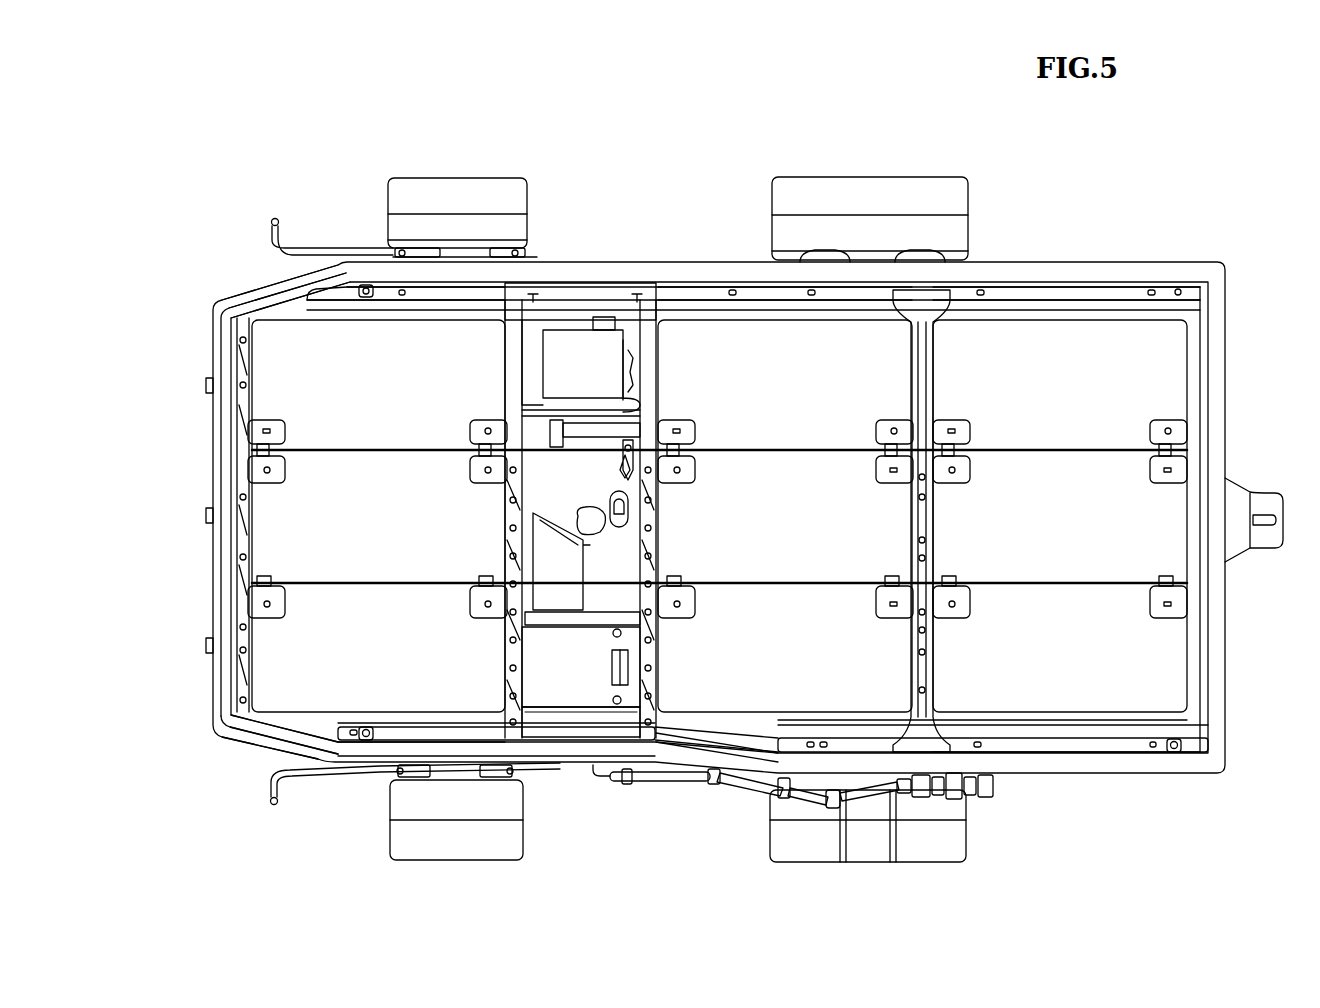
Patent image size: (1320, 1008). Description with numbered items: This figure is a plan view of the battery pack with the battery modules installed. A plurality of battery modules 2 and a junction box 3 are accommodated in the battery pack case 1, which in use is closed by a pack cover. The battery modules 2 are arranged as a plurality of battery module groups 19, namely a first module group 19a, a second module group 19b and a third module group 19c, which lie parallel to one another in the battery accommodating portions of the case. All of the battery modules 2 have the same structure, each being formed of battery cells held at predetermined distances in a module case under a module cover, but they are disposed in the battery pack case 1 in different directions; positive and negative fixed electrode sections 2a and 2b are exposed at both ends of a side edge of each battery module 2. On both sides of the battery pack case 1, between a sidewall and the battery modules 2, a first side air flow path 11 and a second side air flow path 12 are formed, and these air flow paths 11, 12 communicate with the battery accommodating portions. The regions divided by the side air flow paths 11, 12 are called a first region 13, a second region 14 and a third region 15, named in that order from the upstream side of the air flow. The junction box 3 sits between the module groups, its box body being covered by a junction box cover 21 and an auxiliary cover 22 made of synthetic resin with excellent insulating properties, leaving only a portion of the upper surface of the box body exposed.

The battery pack case 1 is at (1143, 262).
The battery module 2 is at (340, 333).
The positive fixed electrode section 2a is at (255, 430).
The negative fixed electrode section 2b is at (470, 417).
The junction box 3 is at (585, 290).
The first side air flow path 11 is at (293, 742).
The second side air flow path 12 is at (272, 297).
The first region 13 is at (383, 723).
The second region 14 is at (757, 730).
The third region 15 is at (1062, 730).
The battery module group 19 is at (753, 209).
The first module group 19a is at (404, 285).
The second module group 19b is at (737, 300).
The third module group 19c is at (1060, 300).
The junction box cover 21 is at (540, 498).
The auxiliary cover 22 is at (573, 725).